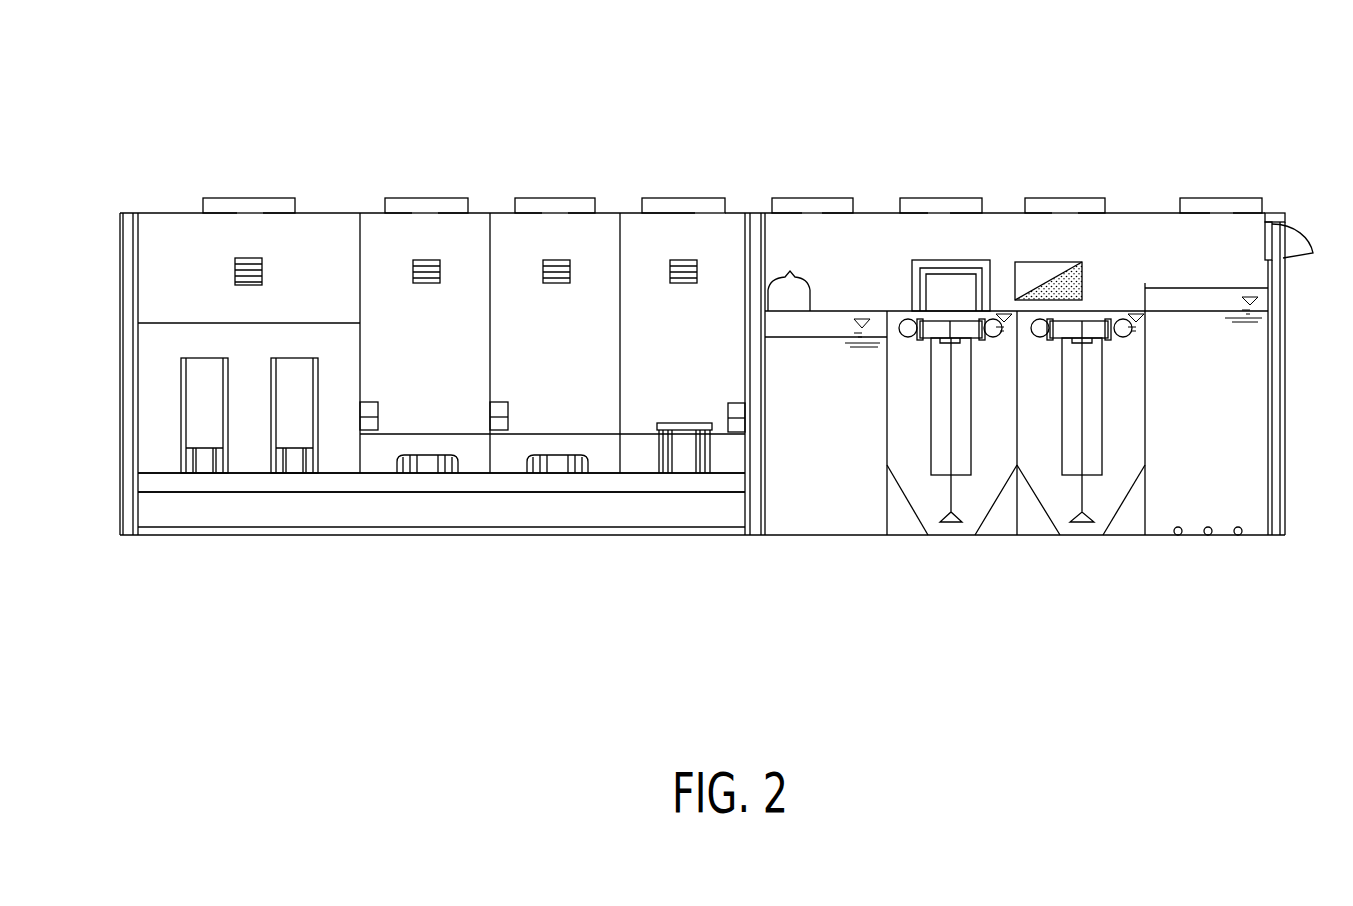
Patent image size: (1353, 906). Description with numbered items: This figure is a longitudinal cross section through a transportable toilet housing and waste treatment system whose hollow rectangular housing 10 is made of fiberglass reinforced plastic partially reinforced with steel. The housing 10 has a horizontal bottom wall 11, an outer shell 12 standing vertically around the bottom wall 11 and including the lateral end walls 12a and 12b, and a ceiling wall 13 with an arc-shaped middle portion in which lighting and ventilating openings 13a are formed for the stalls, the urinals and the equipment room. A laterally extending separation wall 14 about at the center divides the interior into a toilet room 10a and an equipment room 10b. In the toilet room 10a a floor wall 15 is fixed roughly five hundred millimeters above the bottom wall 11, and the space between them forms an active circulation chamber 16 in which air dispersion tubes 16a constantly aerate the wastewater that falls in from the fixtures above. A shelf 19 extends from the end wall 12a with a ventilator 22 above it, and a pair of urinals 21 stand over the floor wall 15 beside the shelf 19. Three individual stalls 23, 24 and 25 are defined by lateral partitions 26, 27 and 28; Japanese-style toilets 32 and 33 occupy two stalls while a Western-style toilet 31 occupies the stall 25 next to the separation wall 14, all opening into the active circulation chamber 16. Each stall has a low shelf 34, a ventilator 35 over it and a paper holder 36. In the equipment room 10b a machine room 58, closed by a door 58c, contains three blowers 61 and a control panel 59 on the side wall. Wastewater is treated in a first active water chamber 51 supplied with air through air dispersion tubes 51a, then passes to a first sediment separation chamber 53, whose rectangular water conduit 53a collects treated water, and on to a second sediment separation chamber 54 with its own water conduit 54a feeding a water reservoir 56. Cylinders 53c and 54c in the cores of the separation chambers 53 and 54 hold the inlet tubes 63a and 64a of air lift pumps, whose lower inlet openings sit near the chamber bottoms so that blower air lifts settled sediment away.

The housing 10 is at (1206, 174).
The toilet room 10a is at (326, 232).
The equipment room 10b is at (1132, 230).
The bottom wall 11 is at (620, 535).
The outer shell 12 is at (1300, 497).
The lateral wall 12a is at (123, 226).
The lateral wall 12b is at (1285, 300).
The ceiling wall 13 is at (170, 213).
The lighting and ventilating opening 13a is at (250, 198).
The separation wall 14 is at (757, 493).
The floor wall 15 is at (160, 473).
The active circulation chamber 16 is at (245, 527).
The air dispersion tube 16a is at (373, 535).
The shelf 19 is at (160, 323).
The urinal 21 is at (285, 388).
The ventilator 22 is at (263, 262).
The individual stall 23 is at (478, 230).
The individual stall 24 is at (606, 230).
The individual stall 25 is at (736, 230).
The lateral partition 26 is at (360, 291).
The lateral partition 27 is at (490, 291).
The lateral partition 28 is at (620, 291).
The Western-style toilet 31 is at (680, 423).
The Japanese-style toilet 32 is at (558, 458).
The Japanese-style toilet 33 is at (428, 458).
The shelf 34 is at (420, 434).
The ventilator 35 is at (427, 260).
The paper holder 36 is at (378, 412).
The first active water chamber 51 is at (1258, 391).
The air dispersion tube 51a is at (1178, 535).
The first sediment separation chamber 53 is at (1048, 495).
The water conduit 53a is at (1123, 313).
The cylinder 53c is at (1105, 470).
The second sediment separation chamber 54 is at (920, 500).
The water conduit 54a is at (907, 323).
The cylinder 54c is at (973, 470).
The water reservoir 56 is at (818, 522).
The machine room 58 is at (813, 213).
The door 58c is at (932, 260).
The control panel 59 is at (1043, 267).
The blower 61 is at (793, 299).
The inlet tube 63a is at (1102, 497).
The inlet tube 64a is at (970, 497).